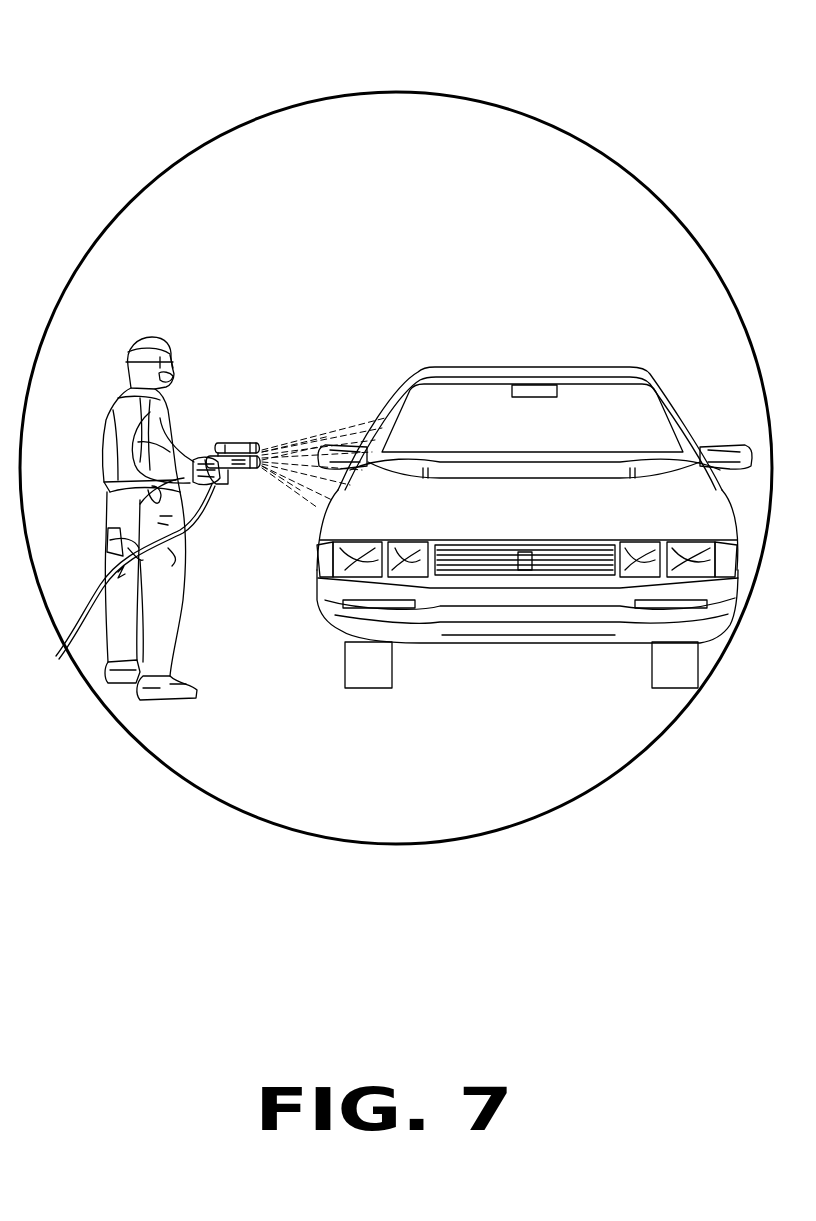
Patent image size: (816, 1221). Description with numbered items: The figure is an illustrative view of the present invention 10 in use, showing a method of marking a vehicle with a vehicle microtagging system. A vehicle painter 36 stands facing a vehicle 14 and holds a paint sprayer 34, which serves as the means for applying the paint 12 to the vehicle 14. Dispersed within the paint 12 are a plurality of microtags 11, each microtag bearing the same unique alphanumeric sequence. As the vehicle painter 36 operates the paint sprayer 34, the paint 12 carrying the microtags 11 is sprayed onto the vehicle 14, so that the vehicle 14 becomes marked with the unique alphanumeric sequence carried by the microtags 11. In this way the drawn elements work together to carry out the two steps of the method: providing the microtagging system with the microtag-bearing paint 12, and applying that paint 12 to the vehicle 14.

The present invention 10 is at (666, 110).
The microtags 11 is at (277, 437).
The paint 12 is at (272, 480).
The vehicle 14 is at (577, 370).
The paint sprayer 34 is at (223, 448).
The vehicle painter 36 is at (160, 652).